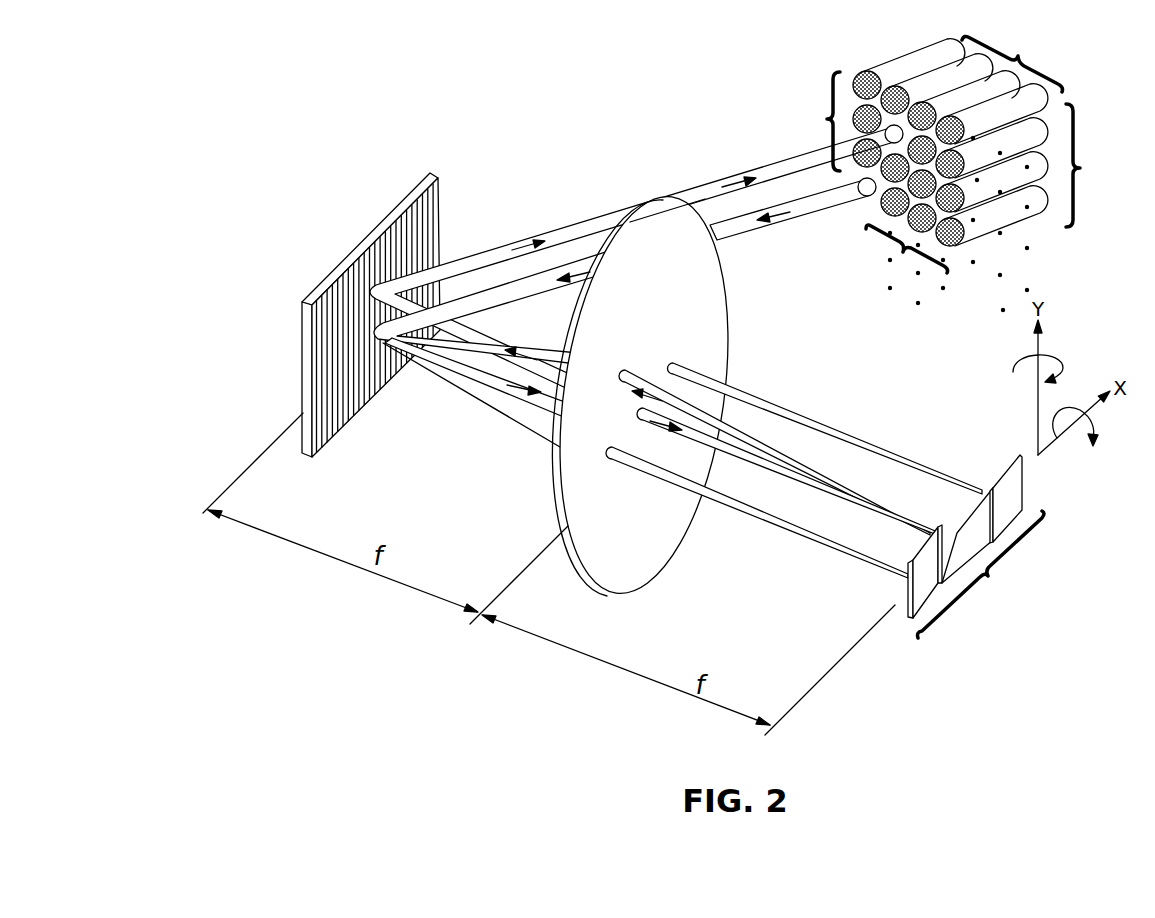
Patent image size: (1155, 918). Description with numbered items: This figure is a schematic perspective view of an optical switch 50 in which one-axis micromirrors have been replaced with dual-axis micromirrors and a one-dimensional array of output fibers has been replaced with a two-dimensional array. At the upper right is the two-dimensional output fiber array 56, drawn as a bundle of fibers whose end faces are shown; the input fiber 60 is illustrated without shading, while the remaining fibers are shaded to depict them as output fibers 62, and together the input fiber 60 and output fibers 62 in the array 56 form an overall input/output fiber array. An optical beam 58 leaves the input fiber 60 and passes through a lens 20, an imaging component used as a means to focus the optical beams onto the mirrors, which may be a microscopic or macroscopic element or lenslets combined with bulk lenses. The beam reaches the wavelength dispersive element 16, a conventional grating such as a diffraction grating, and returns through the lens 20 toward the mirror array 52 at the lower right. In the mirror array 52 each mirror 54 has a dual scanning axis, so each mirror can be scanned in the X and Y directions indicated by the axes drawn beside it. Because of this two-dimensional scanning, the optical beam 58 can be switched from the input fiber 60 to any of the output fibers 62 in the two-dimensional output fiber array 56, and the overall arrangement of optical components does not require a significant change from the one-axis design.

The optical switch 50 is at (288, 128).
The wavelength dispersive element 16 is at (300, 328).
The lens 20 is at (728, 318).
The mirror array 52 is at (981, 574).
The mirror 54 is at (1018, 477).
The 2D output fiber array 56 is at (952, 153).
The optical beam 58 is at (737, 238).
The input fiber 60 is at (866, 198).
The output fiber 62 is at (922, 109).